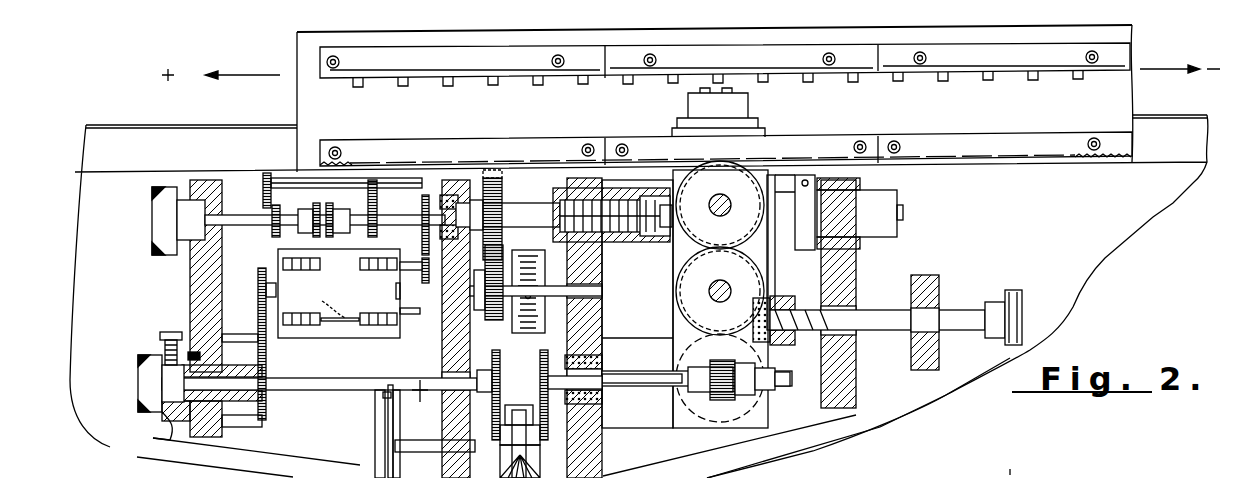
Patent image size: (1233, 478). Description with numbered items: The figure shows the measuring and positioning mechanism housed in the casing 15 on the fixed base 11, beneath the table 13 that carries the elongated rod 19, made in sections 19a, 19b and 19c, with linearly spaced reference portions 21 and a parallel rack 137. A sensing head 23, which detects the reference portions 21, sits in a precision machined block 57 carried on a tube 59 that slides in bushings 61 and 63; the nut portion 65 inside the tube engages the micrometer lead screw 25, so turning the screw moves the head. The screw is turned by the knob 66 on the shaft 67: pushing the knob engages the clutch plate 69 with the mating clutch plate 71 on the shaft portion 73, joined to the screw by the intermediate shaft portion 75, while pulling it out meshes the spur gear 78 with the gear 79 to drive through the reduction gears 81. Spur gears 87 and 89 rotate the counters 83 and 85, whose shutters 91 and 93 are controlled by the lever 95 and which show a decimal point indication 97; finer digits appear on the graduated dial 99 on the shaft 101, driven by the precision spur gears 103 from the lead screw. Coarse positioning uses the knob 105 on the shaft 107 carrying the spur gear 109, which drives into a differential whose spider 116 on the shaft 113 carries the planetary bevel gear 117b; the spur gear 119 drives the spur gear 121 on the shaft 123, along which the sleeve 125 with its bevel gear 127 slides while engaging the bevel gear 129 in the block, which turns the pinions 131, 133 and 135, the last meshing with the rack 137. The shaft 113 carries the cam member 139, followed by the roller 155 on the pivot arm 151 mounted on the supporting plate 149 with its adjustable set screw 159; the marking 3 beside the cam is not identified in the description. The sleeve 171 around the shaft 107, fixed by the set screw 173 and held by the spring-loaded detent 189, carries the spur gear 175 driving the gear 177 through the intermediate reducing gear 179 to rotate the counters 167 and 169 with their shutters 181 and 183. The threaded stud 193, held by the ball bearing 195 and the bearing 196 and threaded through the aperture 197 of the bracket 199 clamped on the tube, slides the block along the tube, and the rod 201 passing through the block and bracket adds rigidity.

The section indicator 3 is at (413, 380).
The fixed base 11 is at (1018, 231).
The table 13 is at (1072, 106).
The casing 15 is at (190, 272).
The elongated rod 19 is at (316, 54).
The rod section 19a is at (465, 60).
The rod section 19b is at (741, 59).
The rod section 19c is at (1004, 56).
The reference portions 21 is at (385, 110).
The sensing head 23 is at (735, 113).
The micrometer lead screw 25 is at (600, 246).
The precision machined block 57 is at (860, 213).
The tube 59 is at (880, 201).
The bushing 61 is at (856, 251).
The bushing 63 is at (648, 238).
The nut portion 65 is at (630, 204).
The knob 66 is at (152, 219).
The shaft 67 is at (252, 201).
The clutch plate 69 is at (305, 233).
The mating clutch plate 71 is at (340, 233).
The shaft portion 73 is at (421, 213).
The intermediate shaft portion 75 is at (430, 178).
The spur gear 78 is at (205, 225).
The gear 79 is at (267, 173).
The reduction gears 81 is at (378, 180).
The counter 83 is at (378, 270).
The counter 85 is at (372, 325).
The spur gear 87 is at (421, 228).
The spur gear 89 is at (422, 283).
The shutter 91 is at (358, 263).
The shutter 93 is at (413, 328).
The lever 95 is at (396, 291).
The decimal point indication 97 is at (331, 305).
The graduated dial 99 is at (548, 319).
The shaft 101 is at (602, 292).
The precision spur gears 103 is at (502, 247).
The knob 105 is at (140, 385).
The shaft 107 is at (335, 391).
The spur gear 109 is at (512, 346).
The shaft 113 is at (545, 446).
The spider 116 is at (600, 441).
The planetary bevel gear 117b is at (440, 451).
The spur gear 119 is at (548, 421).
The spur gear 121 is at (535, 391).
The shaft 123 is at (628, 387).
The sleeve 125 is at (676, 428).
The bevel gear 127 is at (762, 392).
The bevel gear 129 is at (735, 405).
The pinion 131 is at (705, 351).
The pinion 133 is at (700, 267).
The pinion 135 is at (700, 181).
The rack 137 is at (1048, 165).
The cam member 139 is at (375, 468).
The supporting plate 149 is at (1025, 418).
The pivot arm 151 is at (920, 435).
The roller 155 is at (793, 452).
The adjustable set screw 159 is at (1013, 464).
The counter 167 is at (290, 270).
The counter 169 is at (298, 325).
The sleeve 171 is at (170, 441).
The set screw 173 is at (160, 334).
The spur gear 175 is at (262, 433).
The gear 177 is at (258, 290).
The intermediate reducing gear 179 is at (240, 326).
The shutter 181 is at (278, 258).
The shutter 183 is at (318, 340).
The spring-loaded detent 189 is at (195, 350).
The threaded stud 193 is at (948, 310).
The ball bearing 195 is at (845, 286).
The bearing 196 is at (940, 358).
The threaded aperture 197 is at (840, 321).
The bracket 199 is at (845, 269).
The rod 201 is at (636, 338).